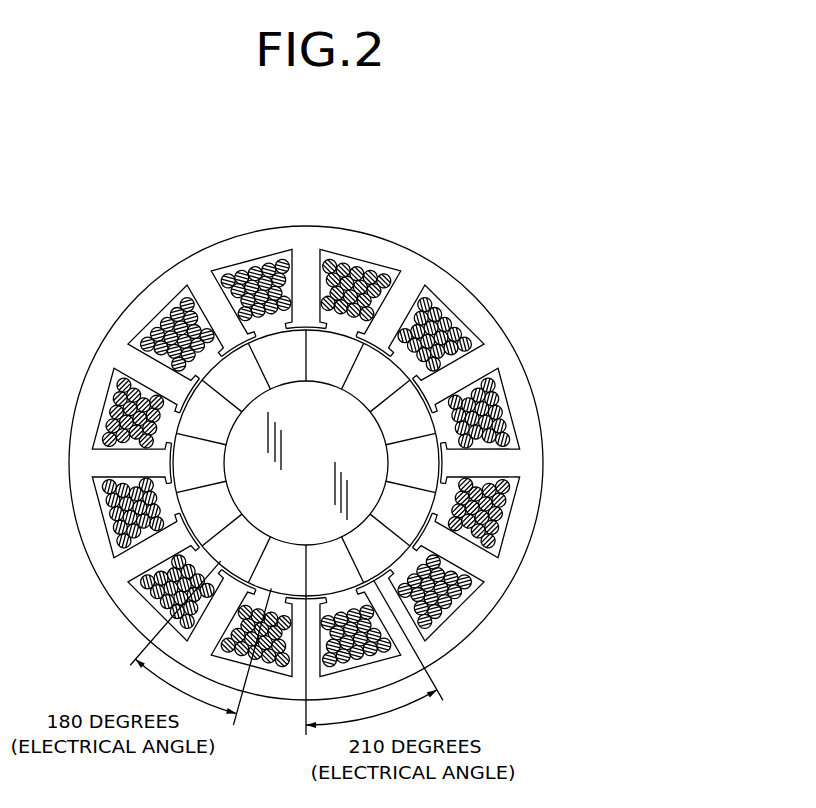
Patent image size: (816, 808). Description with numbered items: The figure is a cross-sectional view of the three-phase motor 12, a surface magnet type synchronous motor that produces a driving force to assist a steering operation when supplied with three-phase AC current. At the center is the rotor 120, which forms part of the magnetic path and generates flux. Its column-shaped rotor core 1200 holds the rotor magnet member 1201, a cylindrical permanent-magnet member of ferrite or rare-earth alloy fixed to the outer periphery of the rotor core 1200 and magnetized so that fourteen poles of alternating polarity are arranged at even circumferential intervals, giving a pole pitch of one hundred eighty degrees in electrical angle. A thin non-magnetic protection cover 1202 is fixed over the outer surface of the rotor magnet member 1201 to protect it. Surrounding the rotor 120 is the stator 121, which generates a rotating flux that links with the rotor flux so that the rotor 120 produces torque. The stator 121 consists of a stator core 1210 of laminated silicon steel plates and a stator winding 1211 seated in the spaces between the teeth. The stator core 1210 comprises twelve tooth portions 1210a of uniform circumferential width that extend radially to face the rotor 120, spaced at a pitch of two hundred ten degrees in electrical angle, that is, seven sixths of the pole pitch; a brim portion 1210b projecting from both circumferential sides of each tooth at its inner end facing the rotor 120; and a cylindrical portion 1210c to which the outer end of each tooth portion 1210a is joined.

The three-phase motor 12 is at (323, 158).
The stator 121 is at (570, 185).
The stator core 1210 is at (372, 238).
The tooth portions 1210a is at (207, 288).
The brim portion 1210b is at (240, 272).
The cylindrical portion 1210c is at (308, 237).
The stator winding 1211 is at (380, 266).
The rotor 120 is at (668, 335).
The rotor core 1200 is at (360, 433).
The rotor magnet member 1201 is at (430, 458).
The protection cover 1202 is at (495, 488).